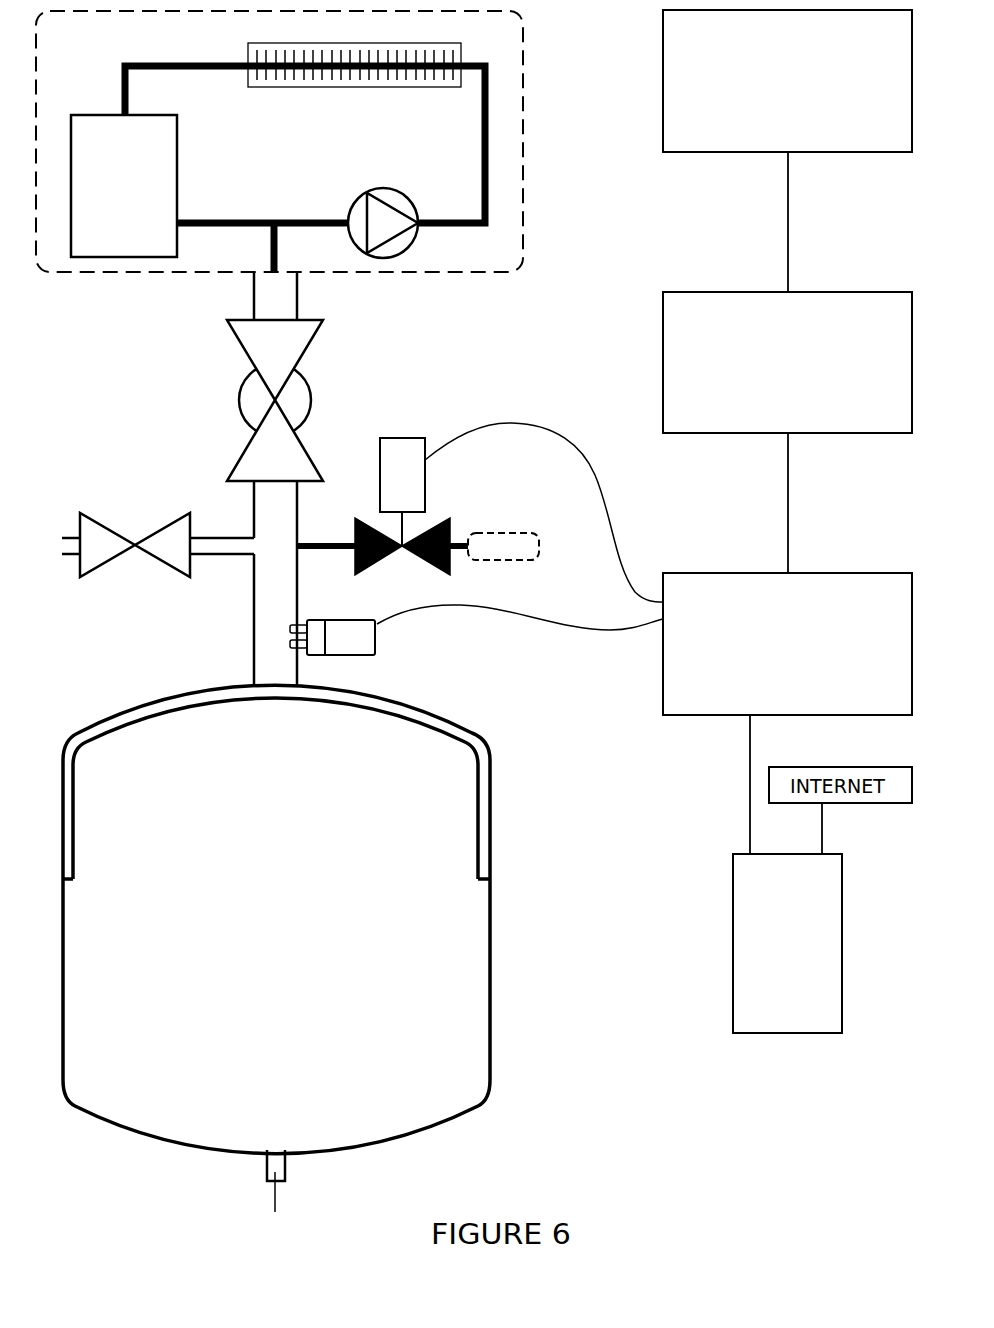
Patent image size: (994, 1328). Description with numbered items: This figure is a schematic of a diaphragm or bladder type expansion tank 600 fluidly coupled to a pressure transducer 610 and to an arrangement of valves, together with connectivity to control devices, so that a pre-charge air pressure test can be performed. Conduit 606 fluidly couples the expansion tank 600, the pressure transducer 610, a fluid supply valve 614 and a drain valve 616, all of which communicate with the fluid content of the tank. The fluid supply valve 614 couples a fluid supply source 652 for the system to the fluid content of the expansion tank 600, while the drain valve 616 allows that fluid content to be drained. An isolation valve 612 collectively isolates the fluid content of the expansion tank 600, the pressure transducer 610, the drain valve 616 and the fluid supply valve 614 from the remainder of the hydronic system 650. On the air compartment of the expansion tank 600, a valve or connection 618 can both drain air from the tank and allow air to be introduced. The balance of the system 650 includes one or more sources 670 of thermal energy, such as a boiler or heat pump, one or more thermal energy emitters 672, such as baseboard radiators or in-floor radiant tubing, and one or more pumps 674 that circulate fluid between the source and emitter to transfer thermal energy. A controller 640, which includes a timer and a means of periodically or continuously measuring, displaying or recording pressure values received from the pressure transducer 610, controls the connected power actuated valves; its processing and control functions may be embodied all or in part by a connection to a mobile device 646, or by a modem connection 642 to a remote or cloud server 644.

The expansion tank 600 is at (160, 695).
The conduit 606 is at (253, 578).
The pressure transducer 610 is at (377, 637).
The isolation valve 612 is at (240, 413).
The fluid supply valve 614 is at (450, 527).
The drain valve 616 is at (160, 530).
The valve or connection 618 is at (263, 1183).
The controller 640 is at (708, 715).
The modem connection 642 is at (763, 435).
The remote or cloud server 644 is at (753, 153).
The mobile device 646 is at (733, 937).
The hydronic system 650 is at (482, 273).
The fluid supply source 652 is at (507, 560).
The source of thermal energy 670 is at (135, 257).
The thermal energy emitter 672 is at (422, 87).
The pump 674 is at (395, 263).